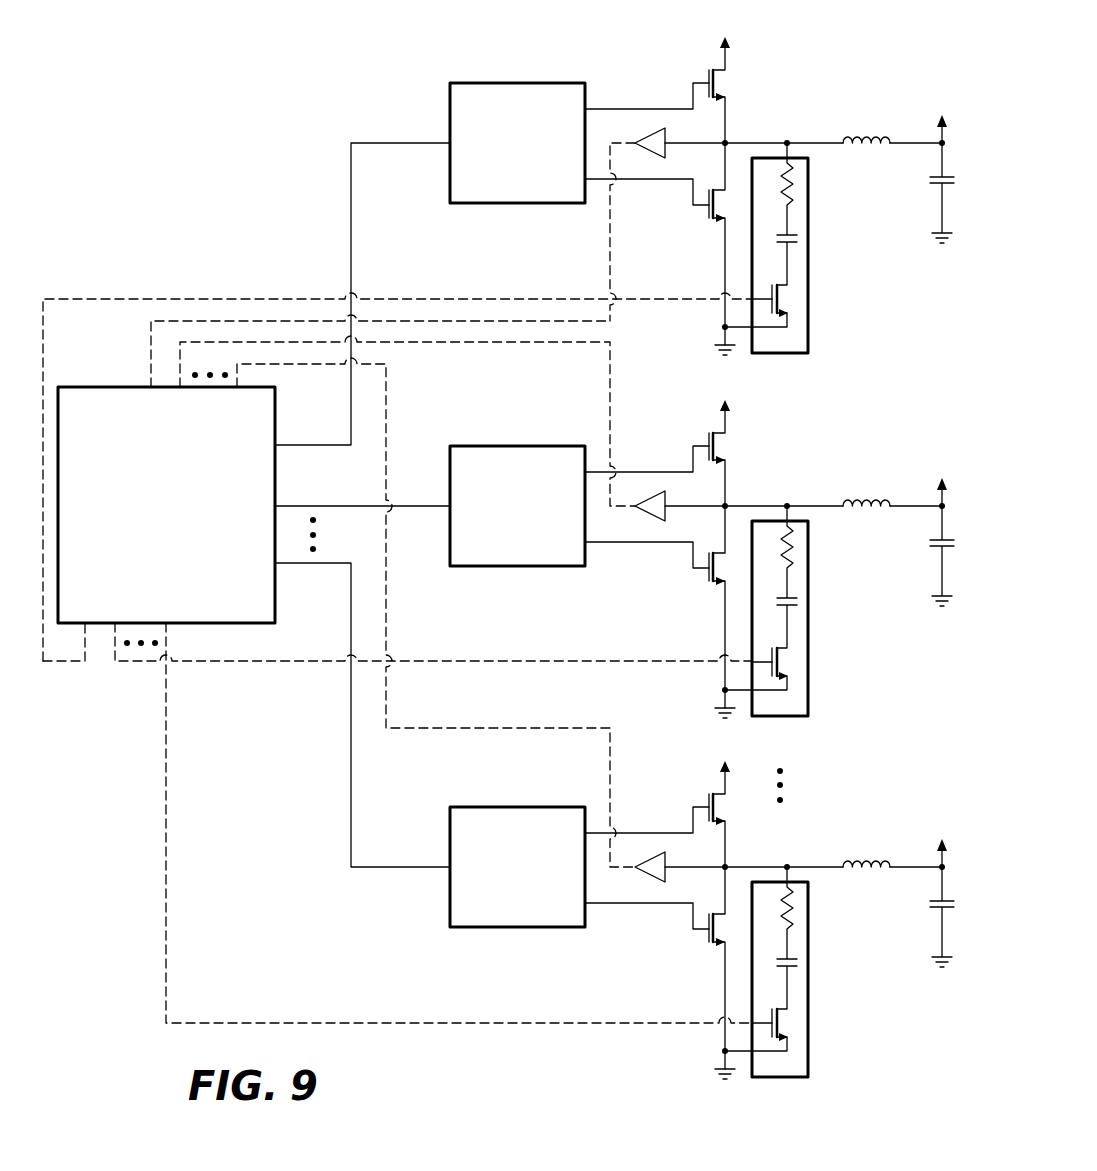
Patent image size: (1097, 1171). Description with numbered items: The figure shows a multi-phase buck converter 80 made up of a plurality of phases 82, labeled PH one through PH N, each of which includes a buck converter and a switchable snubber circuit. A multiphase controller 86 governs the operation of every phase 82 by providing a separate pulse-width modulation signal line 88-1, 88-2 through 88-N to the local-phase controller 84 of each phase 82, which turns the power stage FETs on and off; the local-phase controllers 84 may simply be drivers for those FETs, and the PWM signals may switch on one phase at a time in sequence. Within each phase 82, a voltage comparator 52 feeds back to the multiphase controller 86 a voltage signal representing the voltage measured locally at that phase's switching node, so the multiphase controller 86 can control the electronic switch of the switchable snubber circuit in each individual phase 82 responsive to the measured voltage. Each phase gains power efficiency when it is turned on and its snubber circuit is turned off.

The multi-phase buck converter 80 is at (298, 141).
The phase 82 is at (636, 60).
The local-phase controller 84 is at (488, 83).
The multiphase controller 86 is at (107, 387).
The pulse-width modulation signal line 88-1 is at (350, 217).
The pulse-width modulation signal line 88-2 is at (417, 505).
The pulse-width modulation signal line 88-N is at (350, 718).
The voltage comparator 52 is at (652, 160).